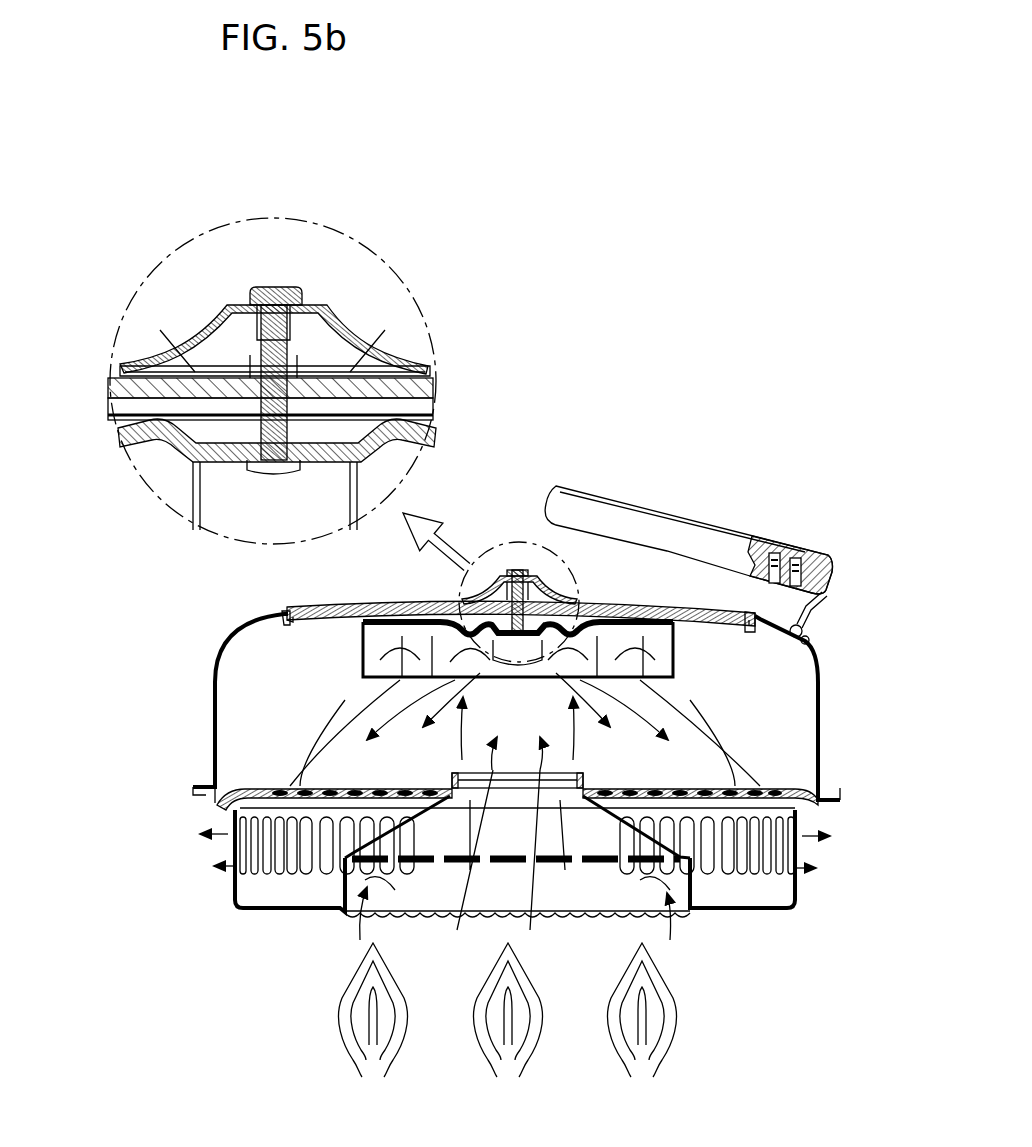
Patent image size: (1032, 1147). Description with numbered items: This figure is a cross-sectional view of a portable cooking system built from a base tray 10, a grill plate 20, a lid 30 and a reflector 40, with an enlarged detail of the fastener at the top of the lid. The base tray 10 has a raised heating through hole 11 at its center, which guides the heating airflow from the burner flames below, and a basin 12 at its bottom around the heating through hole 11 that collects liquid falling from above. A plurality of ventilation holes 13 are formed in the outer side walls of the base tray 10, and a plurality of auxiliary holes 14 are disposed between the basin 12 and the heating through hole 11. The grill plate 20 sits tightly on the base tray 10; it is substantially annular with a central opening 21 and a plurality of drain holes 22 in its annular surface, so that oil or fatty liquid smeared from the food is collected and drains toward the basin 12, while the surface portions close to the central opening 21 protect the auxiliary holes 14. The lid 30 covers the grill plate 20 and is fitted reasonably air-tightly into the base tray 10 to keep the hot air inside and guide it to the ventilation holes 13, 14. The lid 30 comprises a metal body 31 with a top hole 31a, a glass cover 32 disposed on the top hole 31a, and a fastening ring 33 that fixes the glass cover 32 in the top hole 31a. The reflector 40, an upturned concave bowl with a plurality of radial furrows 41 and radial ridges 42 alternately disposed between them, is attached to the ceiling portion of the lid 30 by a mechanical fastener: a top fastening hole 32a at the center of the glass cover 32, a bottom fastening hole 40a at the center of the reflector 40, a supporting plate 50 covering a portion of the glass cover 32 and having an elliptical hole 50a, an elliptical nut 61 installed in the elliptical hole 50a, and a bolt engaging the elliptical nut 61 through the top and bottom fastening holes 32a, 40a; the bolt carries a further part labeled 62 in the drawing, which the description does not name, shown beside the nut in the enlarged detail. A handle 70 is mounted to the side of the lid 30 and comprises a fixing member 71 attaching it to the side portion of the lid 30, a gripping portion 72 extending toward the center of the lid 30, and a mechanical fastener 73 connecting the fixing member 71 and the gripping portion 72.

The base tray 10 is at (796, 902).
The heating through hole 11 is at (585, 872).
The basin 12 is at (760, 908).
The ventilation holes 13 is at (800, 862).
The auxiliary holes 14 is at (524, 866).
The grill plate 20 is at (246, 791).
The central opening 21 is at (470, 872).
The drain holes 22 is at (352, 790).
The lid 30 is at (832, 700).
The metal body 31 is at (822, 735).
The top hole 31a is at (283, 611).
The glass cover 32 is at (108, 390).
The top fastening hole 32a is at (122, 368).
The fastening ring 33 is at (745, 614).
The reflector 40 is at (130, 440).
The bottom fastening hole 40a is at (197, 480).
The radial furrows 41 is at (618, 618).
The radial ridges 42 is at (665, 618).
The supporting plate 50 is at (345, 335).
The elliptical hole 50a is at (265, 300).
The elliptical nut 61 is at (265, 292).
The bushing 62 is at (262, 360).
The handle 70 is at (828, 550).
The fixing member 71 is at (810, 607).
The gripping portion 72 is at (676, 532).
The mechanical fastener 73 is at (794, 556).